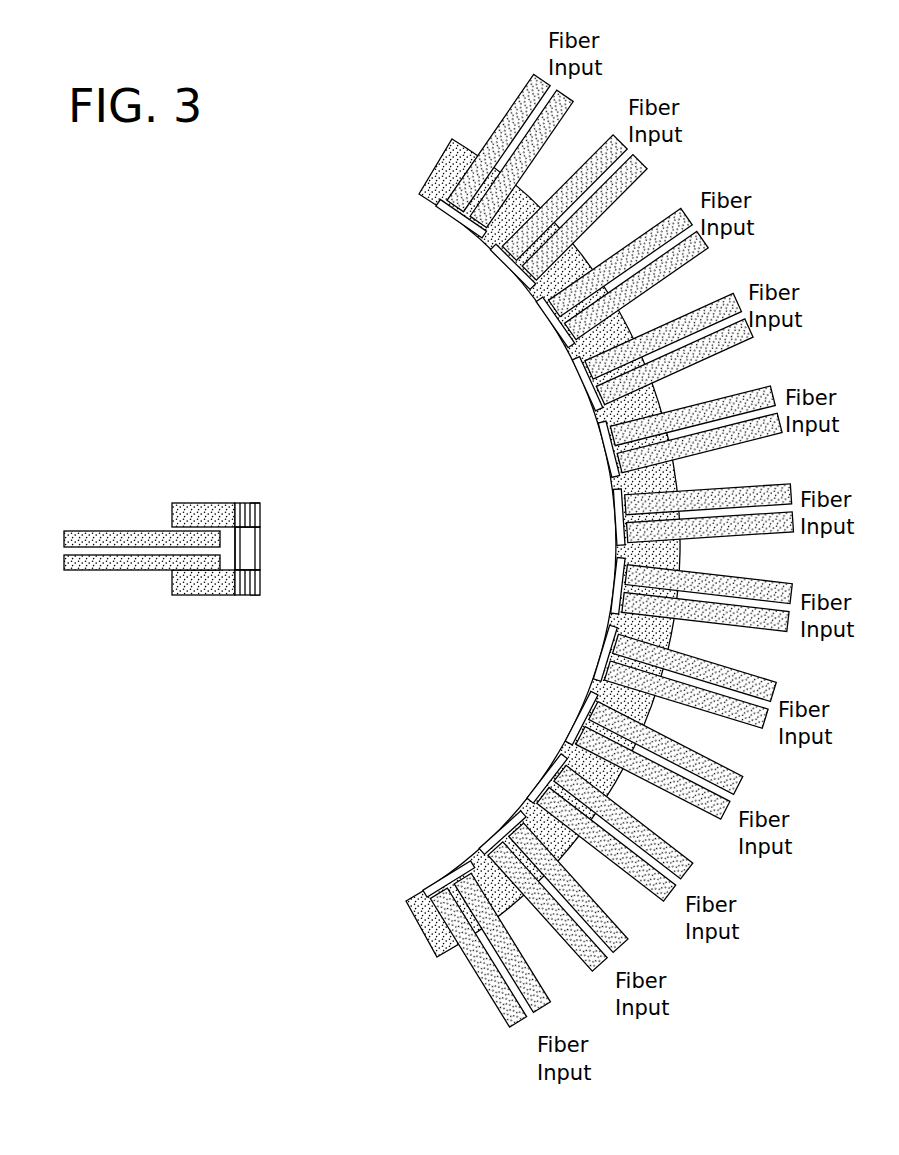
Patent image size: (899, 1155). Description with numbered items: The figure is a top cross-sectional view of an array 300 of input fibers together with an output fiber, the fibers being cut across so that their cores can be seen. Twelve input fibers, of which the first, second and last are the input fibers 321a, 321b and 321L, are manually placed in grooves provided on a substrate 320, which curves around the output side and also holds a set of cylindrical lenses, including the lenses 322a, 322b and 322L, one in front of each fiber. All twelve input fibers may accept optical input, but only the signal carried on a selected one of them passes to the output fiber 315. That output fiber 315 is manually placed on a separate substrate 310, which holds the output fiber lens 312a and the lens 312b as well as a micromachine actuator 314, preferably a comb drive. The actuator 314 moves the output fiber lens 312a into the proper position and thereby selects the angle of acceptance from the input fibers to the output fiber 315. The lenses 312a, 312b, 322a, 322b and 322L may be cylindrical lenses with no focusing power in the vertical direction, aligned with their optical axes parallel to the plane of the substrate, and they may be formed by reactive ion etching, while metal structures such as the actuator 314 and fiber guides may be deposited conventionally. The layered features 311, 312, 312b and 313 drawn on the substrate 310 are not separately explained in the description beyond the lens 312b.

The array 300 is at (266, 768).
The substrate 310 is at (183, 597).
The lens layer 311 is at (250, 569).
The spacer layer 312 is at (262, 520).
The output fiber lens 312a is at (262, 548).
The lens 312b is at (242, 576).
The lens layer 313 is at (262, 584).
The micromachine actuator 314 is at (255, 503).
The output fiber 315 is at (116, 531).
The substrate 320 is at (432, 957).
The input fiber 321L is at (488, 131).
The lens 322L is at (452, 224).
The input fiber 321a is at (502, 995).
The lens 322a is at (430, 880).
The input fiber 321b is at (590, 985).
The lens 322b is at (494, 832).